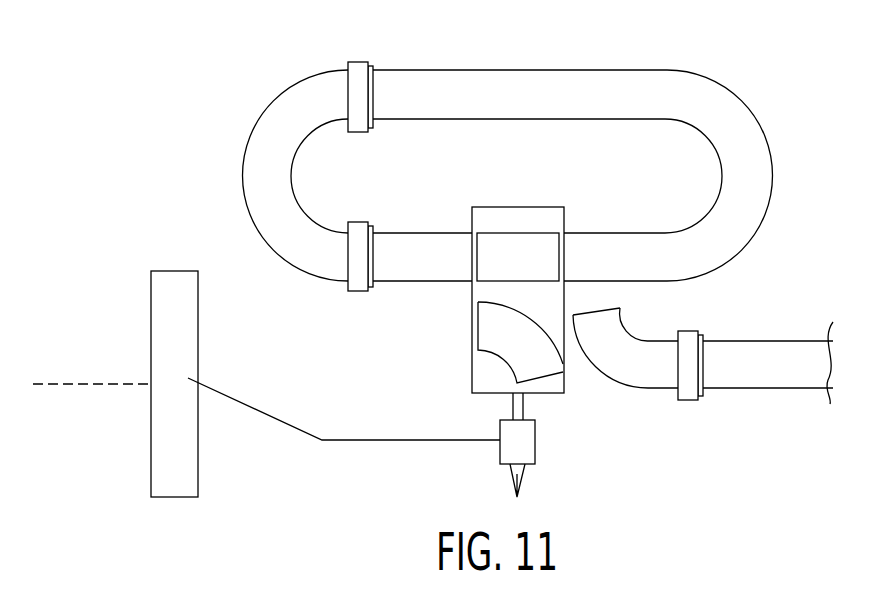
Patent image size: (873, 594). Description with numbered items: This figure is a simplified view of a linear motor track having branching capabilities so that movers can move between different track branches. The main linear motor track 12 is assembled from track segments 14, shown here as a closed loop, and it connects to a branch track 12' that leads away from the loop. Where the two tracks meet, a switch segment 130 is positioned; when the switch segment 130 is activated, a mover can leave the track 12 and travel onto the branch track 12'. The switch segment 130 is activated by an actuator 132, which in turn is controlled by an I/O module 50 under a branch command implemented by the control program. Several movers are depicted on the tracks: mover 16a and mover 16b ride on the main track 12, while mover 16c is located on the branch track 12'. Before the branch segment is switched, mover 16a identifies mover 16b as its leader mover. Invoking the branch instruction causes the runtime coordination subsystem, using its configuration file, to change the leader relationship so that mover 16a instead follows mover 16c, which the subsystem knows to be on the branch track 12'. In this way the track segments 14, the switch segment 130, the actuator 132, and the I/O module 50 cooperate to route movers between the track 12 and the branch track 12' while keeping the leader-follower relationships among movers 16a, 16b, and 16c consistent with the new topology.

The linear motor track 12 is at (508, 154).
The branch track 12' is at (703, 342).
The track segments 14 is at (521, 249).
The mover 16a is at (358, 292).
The mover 16b is at (361, 62).
The mover 16c is at (688, 401).
The I/O module 50 is at (172, 497).
The switch segment 130 is at (565, 395).
The actuator 132 is at (535, 446).